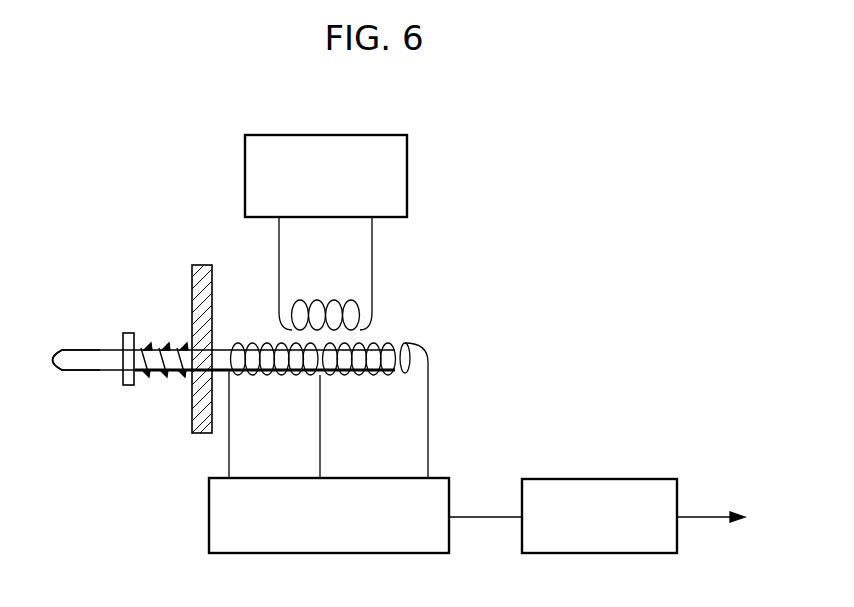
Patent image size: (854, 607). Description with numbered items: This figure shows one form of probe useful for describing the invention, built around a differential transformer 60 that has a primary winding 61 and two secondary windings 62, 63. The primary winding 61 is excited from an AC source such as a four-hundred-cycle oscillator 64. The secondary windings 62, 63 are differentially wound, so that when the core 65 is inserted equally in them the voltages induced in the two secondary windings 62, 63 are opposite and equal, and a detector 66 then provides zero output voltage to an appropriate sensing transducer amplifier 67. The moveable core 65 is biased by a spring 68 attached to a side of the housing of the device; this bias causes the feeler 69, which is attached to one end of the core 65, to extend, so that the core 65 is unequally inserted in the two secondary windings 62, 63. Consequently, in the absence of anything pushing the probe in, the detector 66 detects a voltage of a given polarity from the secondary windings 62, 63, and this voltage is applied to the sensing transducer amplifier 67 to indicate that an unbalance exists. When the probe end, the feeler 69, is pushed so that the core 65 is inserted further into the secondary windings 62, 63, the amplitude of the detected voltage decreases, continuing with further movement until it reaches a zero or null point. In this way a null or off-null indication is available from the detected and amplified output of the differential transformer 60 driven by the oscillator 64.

The differential transformer 60 is at (388, 333).
The primary winding 61 is at (334, 300).
The secondary winding 62 is at (282, 375).
The secondary winding 63 is at (358, 374).
The oscillator 64 is at (407, 186).
The core 65 is at (224, 350).
The detector 66 is at (308, 553).
The sensing transducer amplifier 67 is at (600, 479).
The spring 68 is at (155, 347).
The feeler 69 is at (70, 367).